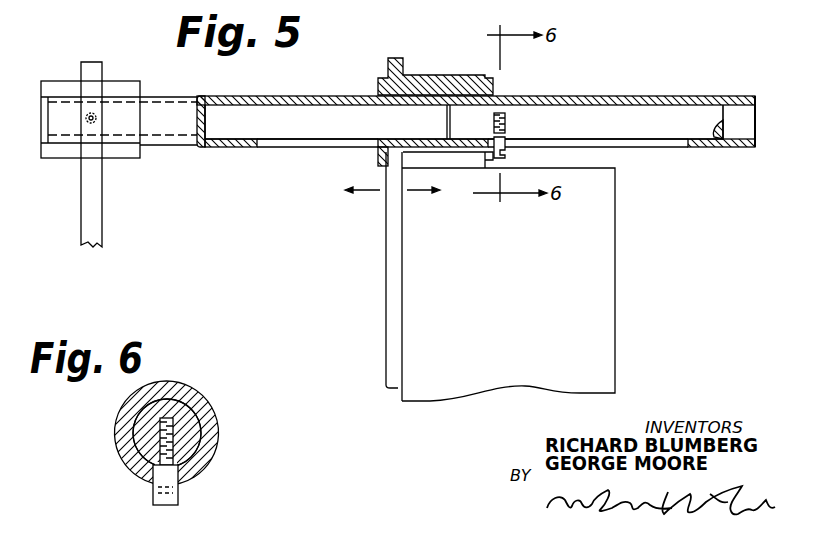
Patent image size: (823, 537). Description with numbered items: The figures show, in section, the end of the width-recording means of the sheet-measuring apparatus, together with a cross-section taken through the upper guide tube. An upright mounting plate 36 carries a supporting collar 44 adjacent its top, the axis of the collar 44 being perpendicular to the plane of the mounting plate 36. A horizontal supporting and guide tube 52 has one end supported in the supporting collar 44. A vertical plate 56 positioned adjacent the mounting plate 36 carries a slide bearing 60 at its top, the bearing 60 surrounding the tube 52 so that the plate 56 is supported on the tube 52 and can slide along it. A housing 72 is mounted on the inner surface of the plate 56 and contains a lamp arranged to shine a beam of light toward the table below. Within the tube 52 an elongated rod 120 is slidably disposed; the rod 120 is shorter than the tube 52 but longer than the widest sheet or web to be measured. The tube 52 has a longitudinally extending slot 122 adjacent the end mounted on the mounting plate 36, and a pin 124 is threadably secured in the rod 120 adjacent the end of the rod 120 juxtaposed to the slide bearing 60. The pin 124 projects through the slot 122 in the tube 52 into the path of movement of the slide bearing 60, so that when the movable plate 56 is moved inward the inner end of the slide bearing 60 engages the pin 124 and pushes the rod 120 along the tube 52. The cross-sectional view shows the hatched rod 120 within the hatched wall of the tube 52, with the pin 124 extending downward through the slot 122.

In FIG. 5, the mounting plate 36 is at (90, 188).
In FIG. 5, the supporting collar 44 is at (67, 87).
In FIG. 5, the supporting and guide tube 52 is at (673, 98).
In FIG. 6, the supporting and guide tube 52 is at (170, 392).
In FIG. 5, the vertical plate 56 is at (386, 292).
In FIG. 5, the slide bearing 60 is at (422, 71).
In FIG. 5, the housing 72 is at (600, 245).
In FIG. 5, the rod 120 is at (583, 120).
In FIG. 6, the rod 120 is at (190, 427).
In FIG. 5, the slot 122 is at (630, 144).
In FIG. 6, the slot 122 is at (153, 475).
In FIG. 5, the pin 124 is at (507, 151).
In FIG. 6, the pin 124 is at (170, 490).